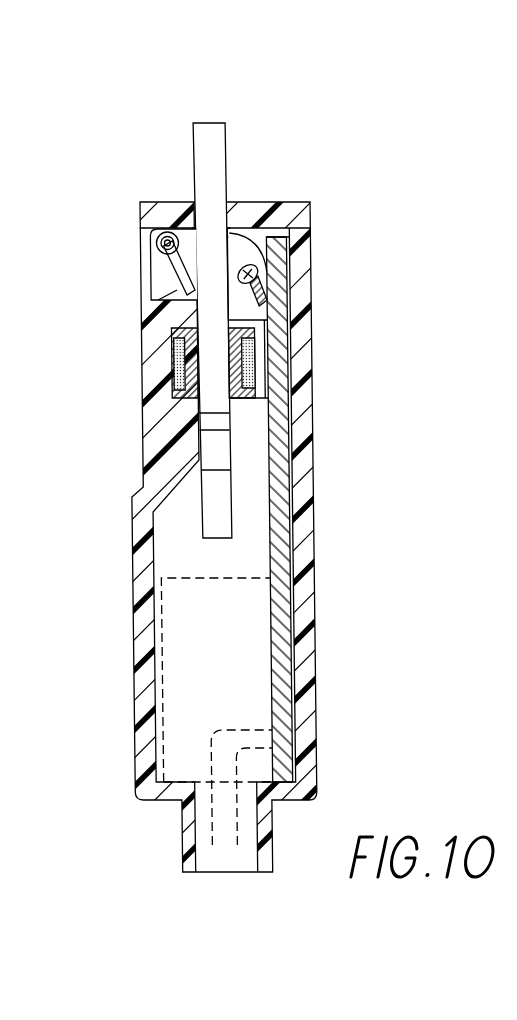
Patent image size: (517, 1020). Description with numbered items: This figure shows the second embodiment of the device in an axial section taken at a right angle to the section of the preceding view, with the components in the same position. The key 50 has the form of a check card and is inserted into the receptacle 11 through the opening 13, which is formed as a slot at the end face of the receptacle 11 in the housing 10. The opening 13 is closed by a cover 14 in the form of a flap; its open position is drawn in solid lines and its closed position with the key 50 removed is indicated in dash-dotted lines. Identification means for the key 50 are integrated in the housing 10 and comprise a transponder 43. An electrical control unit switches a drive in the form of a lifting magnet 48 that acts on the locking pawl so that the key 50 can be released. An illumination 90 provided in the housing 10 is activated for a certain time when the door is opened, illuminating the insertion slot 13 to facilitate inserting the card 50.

The housing 10 is at (317, 220).
The receptacle 11 is at (250, 506).
The opening 13 is at (230, 232).
The cover 14 is at (215, 279).
The transponder 43 is at (252, 371).
The lifting magnet 48 is at (221, 628).
The key 50 is at (232, 137).
The illumination 90 is at (258, 281).